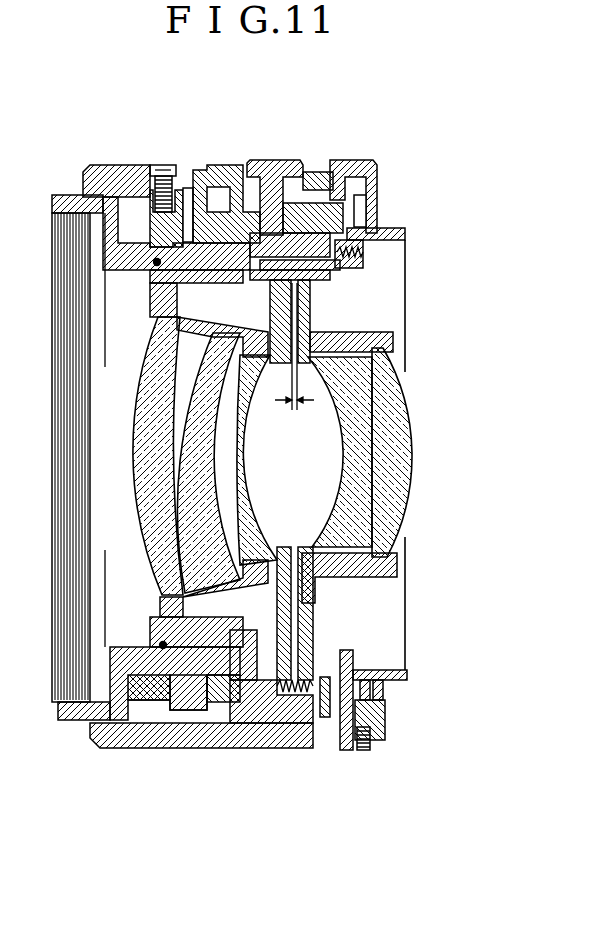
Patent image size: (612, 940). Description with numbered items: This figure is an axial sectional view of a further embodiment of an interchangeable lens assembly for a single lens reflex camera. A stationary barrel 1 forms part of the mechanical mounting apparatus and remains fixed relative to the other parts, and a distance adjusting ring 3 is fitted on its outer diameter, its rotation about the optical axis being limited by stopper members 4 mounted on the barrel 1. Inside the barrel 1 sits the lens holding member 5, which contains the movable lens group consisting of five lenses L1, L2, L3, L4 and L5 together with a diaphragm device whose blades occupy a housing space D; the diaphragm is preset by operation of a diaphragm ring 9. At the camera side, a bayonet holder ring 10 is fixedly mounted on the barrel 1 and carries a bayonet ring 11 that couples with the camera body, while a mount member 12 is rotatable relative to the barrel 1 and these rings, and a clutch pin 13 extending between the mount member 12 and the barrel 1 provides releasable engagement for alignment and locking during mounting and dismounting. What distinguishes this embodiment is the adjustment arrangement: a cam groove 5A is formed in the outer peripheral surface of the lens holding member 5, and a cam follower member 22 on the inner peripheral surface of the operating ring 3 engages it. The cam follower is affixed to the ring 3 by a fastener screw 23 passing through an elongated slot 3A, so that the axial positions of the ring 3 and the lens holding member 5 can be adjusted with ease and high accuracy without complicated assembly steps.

The stationary barrel 1 is at (232, 163).
The distance adjusting ring 3 is at (100, 164).
The slot 3A is at (150, 188).
The stopper member 4 is at (183, 710).
The lens holding member 5 is at (70, 194).
The cam groove 5A is at (153, 268).
The diaphragm ring 9 is at (287, 158).
The bayonet holder ring 10 is at (365, 160).
The bayonet ring 11 is at (376, 192).
The mount member 12 is at (397, 226).
The clutch pin 13 is at (327, 228).
The cam follower member 22 is at (188, 186).
The fastener screw 23 is at (166, 164).
The first lens L1 is at (143, 399).
The second lens L2 is at (184, 448).
The third lens L3 is at (250, 497).
The fourth lens L4 is at (355, 444).
The fifth lens L5 is at (413, 449).
The housing space for diaphragm blades D is at (294, 405).